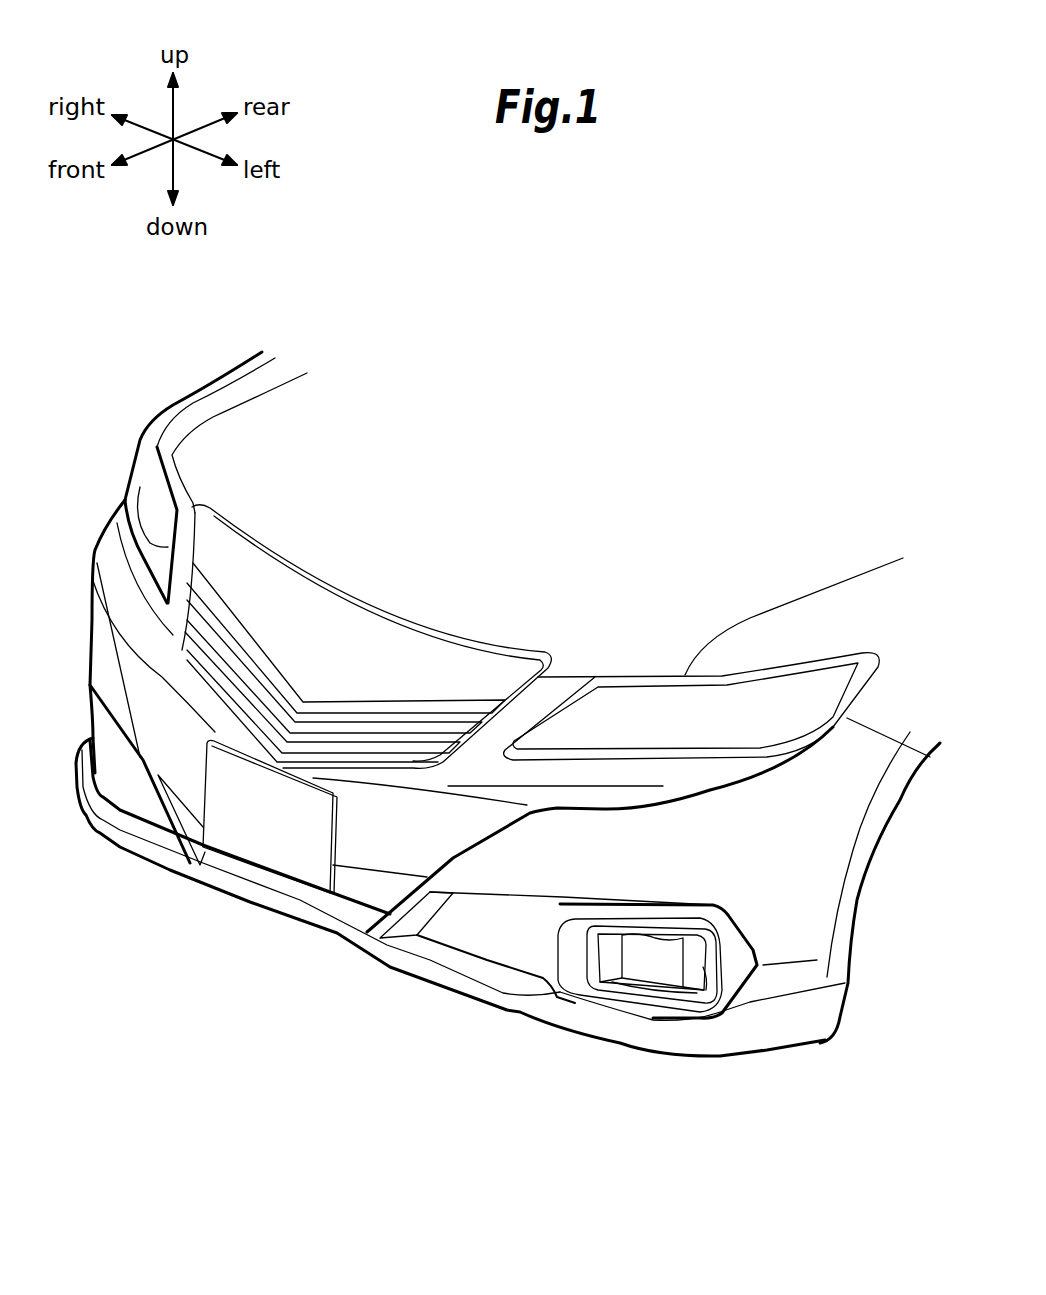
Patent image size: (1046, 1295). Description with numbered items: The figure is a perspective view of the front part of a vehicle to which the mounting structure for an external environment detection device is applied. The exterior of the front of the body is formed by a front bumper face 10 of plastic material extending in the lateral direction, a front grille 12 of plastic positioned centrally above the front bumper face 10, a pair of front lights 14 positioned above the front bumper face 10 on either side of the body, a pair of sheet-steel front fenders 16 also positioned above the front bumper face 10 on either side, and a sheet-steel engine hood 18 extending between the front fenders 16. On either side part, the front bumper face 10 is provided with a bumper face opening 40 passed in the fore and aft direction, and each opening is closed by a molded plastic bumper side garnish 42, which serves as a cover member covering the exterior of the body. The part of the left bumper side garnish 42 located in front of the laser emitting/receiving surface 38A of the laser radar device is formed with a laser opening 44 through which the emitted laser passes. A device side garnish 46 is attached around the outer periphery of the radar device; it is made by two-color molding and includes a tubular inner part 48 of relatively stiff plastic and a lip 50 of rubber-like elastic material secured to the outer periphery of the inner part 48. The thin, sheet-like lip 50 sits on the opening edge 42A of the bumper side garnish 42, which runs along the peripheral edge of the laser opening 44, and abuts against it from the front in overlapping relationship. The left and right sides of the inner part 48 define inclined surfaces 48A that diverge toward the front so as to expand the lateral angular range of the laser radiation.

The front bumper face 10 is at (493, 890).
The front grille 12 is at (407, 623).
The headlight 14 is at (160, 510).
The front fender 16 is at (927, 723).
The engine hood 18 is at (267, 427).
The laser emitting/receiving surface 38A is at (650, 987).
The bumper face opening 40 is at (102, 712).
The bumper side garnish 42 is at (130, 792).
The opening edge 42A is at (573, 992).
The laser opening 44 is at (630, 990).
The device side garnish 46 is at (690, 946).
The inner part 48 is at (720, 1013).
The inclined surface 48A is at (608, 942).
The lip 50 is at (692, 997).